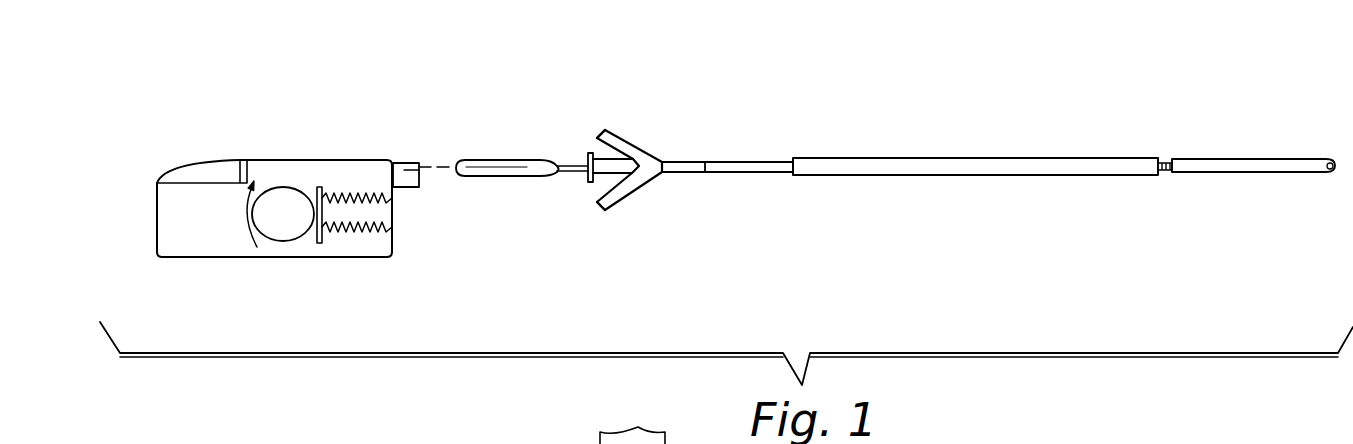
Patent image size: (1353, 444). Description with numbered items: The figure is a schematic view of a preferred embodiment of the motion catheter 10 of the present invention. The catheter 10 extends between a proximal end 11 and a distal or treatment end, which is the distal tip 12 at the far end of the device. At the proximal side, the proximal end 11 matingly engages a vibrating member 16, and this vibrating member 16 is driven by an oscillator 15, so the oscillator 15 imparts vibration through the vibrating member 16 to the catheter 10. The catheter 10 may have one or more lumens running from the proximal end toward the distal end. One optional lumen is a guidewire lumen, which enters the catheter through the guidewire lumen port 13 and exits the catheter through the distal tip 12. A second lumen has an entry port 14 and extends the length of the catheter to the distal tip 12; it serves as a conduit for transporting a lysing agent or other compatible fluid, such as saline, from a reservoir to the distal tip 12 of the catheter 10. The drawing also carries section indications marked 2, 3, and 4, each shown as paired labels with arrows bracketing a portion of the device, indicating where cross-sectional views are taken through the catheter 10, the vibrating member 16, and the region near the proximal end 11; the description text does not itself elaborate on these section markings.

The motion catheter 10 is at (872, 158).
The proximal end 11 is at (548, 174).
The distal tip 12 is at (1323, 172).
The guidewire lumen port 13 is at (605, 130).
The entry port 14 is at (617, 202).
The oscillator 15 is at (298, 190).
The vibrating member 16 is at (418, 164).
The section line 2- 2 is at (1222, 245).
The section line 3- 3 is at (694, 245).
The section line 4- 4 is at (404, 170).